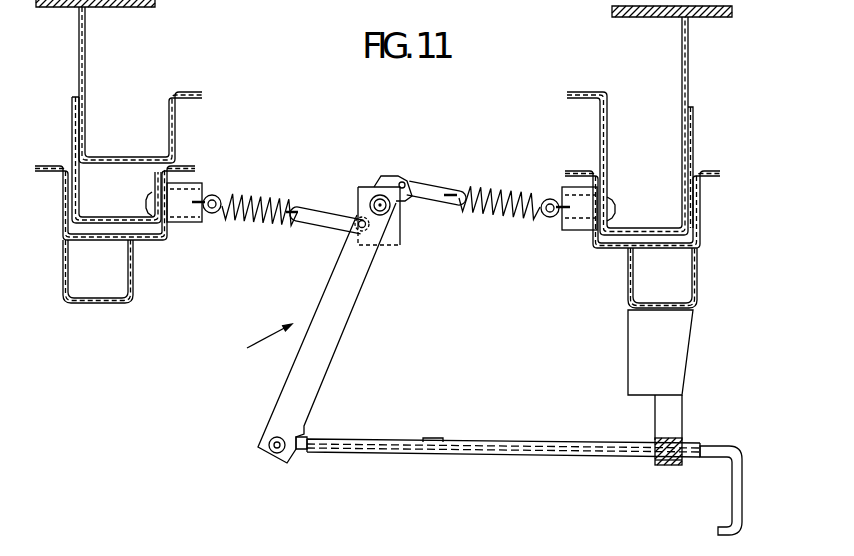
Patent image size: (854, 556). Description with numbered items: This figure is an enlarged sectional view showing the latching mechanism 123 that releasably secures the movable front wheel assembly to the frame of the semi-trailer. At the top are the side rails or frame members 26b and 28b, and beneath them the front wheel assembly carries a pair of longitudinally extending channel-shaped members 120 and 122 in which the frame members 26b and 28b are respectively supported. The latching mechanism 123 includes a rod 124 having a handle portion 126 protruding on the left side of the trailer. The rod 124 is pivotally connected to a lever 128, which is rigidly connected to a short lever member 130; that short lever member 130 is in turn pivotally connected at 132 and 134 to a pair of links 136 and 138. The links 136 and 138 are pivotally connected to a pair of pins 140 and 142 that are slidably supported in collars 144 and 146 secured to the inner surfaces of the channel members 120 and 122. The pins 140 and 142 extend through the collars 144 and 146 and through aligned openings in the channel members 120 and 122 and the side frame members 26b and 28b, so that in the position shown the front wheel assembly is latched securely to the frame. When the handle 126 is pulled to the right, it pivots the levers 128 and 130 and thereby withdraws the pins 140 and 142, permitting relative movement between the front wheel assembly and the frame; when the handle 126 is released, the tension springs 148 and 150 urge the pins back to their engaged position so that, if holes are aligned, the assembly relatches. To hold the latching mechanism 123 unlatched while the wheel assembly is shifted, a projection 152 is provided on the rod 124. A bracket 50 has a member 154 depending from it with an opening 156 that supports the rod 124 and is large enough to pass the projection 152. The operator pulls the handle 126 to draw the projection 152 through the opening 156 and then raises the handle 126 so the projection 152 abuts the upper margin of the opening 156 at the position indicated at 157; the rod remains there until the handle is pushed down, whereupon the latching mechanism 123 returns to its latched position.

The side frame member 28b is at (72, 118).
The side frame member 26b is at (693, 132).
The channel-shaped member 122 is at (63, 206).
The channel-shaped member 120 is at (700, 206).
The collar 146 is at (182, 224).
The collar 144 is at (575, 229).
The pin 142 is at (215, 214).
The pin 140 is at (560, 202).
The tension spring 150 is at (255, 196).
The tension spring 148 is at (500, 188).
The link 138 is at (327, 210).
The link 136 is at (437, 182).
The pivotal connection 134 is at (351, 233).
The short lever member 130 is at (385, 186).
The pivotal connection 132 is at (402, 181).
The lever 128 is at (357, 303).
The latching mechanism 123 is at (253, 341).
The rod 124 is at (509, 442).
The projection 152 is at (436, 437).
The bracket 50 is at (690, 340).
The depending member 154 is at (673, 412).
The unlatched holding position 157 is at (687, 438).
The opening 156 is at (687, 464).
The handle portion 126 is at (735, 499).